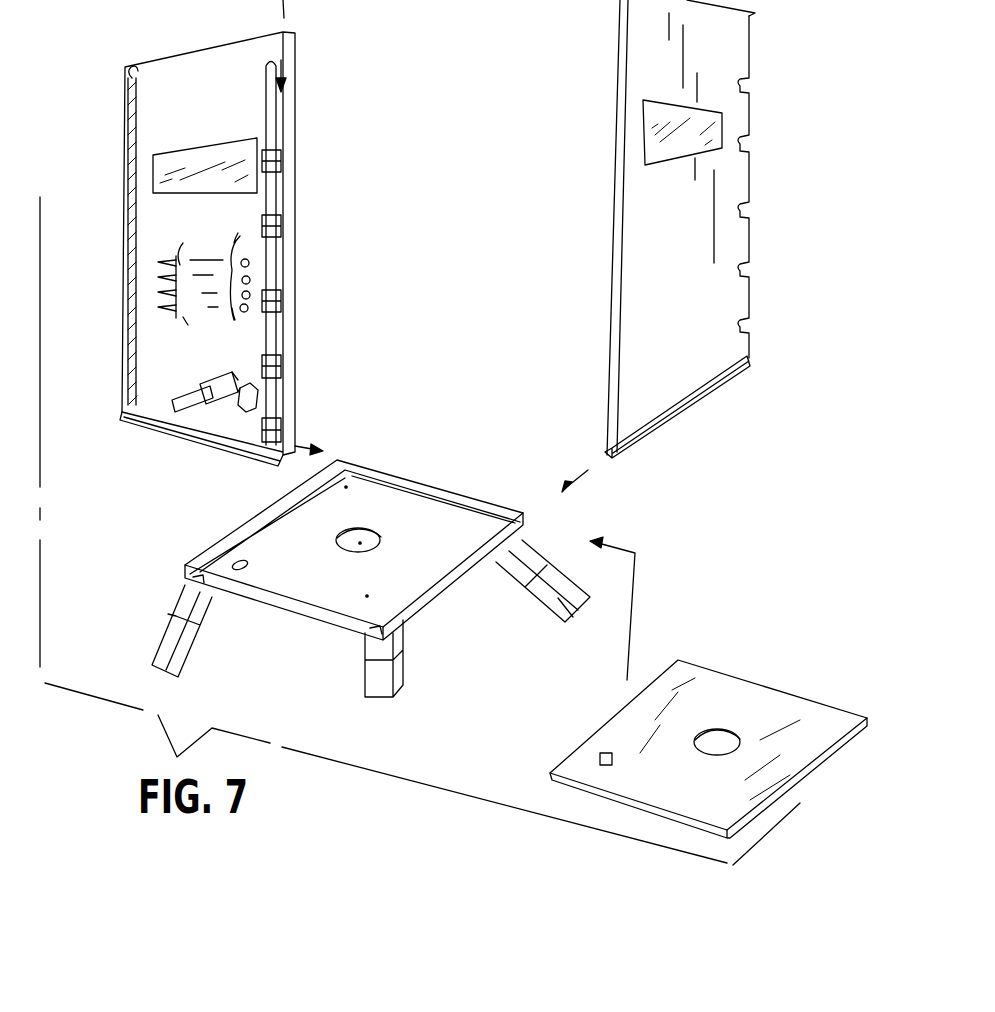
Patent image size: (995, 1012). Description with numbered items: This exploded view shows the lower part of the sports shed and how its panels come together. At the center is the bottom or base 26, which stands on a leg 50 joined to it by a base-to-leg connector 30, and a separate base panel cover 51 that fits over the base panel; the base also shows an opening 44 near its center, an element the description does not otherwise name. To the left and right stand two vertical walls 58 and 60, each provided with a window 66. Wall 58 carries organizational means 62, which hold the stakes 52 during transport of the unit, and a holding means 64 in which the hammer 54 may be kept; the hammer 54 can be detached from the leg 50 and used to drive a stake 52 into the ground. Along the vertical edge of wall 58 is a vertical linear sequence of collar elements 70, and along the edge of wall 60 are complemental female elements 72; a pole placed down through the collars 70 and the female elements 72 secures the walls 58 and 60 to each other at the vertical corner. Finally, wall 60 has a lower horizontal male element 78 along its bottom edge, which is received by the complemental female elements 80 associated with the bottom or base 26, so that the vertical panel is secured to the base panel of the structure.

The bottom or base 26 is at (378, 527).
The base-to-leg connector 30 is at (403, 637).
The hole 44 is at (463, 535).
The leg 50 is at (400, 673).
The base panel cover 51 is at (722, 695).
The stake 52 is at (163, 310).
The hammer 54 is at (250, 387).
The vertical wall 58 is at (172, 88).
The vertical wall 60 is at (675, 318).
The organizational means 62 is at (193, 280).
The holding means 64 is at (213, 417).
The window 66 is at (667, 127).
The collar elements 70 is at (283, 163).
The complemental female elements 72 is at (743, 208).
The lower horizontal male element 78 is at (677, 420).
The complemental female elements 80 is at (535, 518).